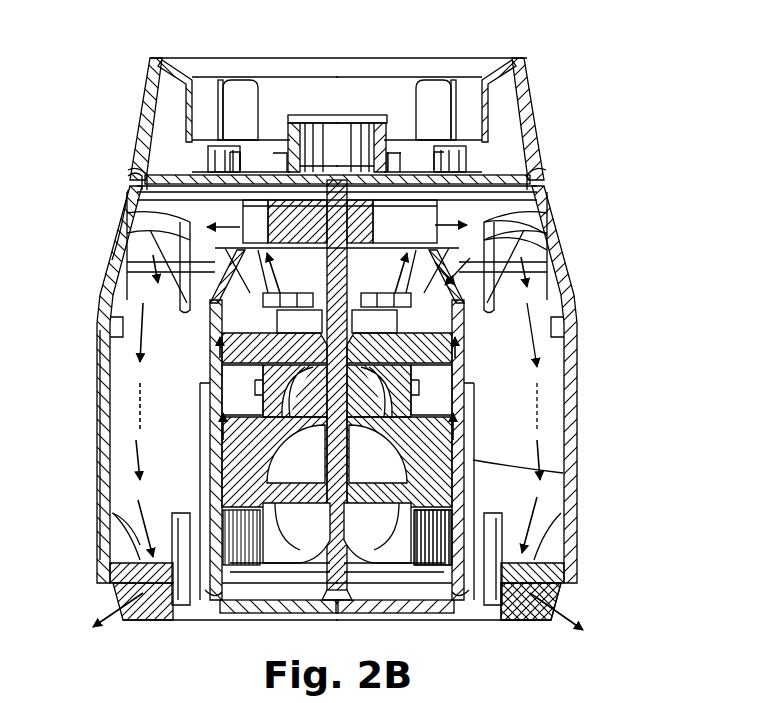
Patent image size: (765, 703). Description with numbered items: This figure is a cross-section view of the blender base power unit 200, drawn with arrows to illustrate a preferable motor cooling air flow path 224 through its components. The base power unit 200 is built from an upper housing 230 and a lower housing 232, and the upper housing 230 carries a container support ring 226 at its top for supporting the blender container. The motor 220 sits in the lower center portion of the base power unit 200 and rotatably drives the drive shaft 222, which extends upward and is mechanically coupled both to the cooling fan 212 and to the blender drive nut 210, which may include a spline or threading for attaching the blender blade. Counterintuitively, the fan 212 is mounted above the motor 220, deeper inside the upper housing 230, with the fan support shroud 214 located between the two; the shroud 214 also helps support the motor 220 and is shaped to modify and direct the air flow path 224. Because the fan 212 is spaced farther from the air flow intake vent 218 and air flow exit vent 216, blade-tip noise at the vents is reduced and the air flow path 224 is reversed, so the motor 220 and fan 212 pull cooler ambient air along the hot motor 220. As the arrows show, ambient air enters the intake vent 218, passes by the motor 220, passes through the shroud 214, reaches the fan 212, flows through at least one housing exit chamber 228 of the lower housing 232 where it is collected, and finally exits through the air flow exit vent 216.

The base power unit 200 is at (185, 42).
The blender drive nut 210 is at (336, 113).
The cooling fan 212 is at (463, 212).
The fan support shroud 214 is at (456, 282).
The air flow exit vent 216 is at (563, 587).
The air flow intake vent 218 is at (440, 585).
The motor 220 is at (290, 473).
The drive shaft 222 is at (128, 190).
The air flow path 224 is at (567, 433).
The container support ring 226 is at (524, 58).
The housing exit chamber 228 is at (510, 372).
The upper housing 230 is at (108, 263).
The lower housing 232 is at (100, 440).